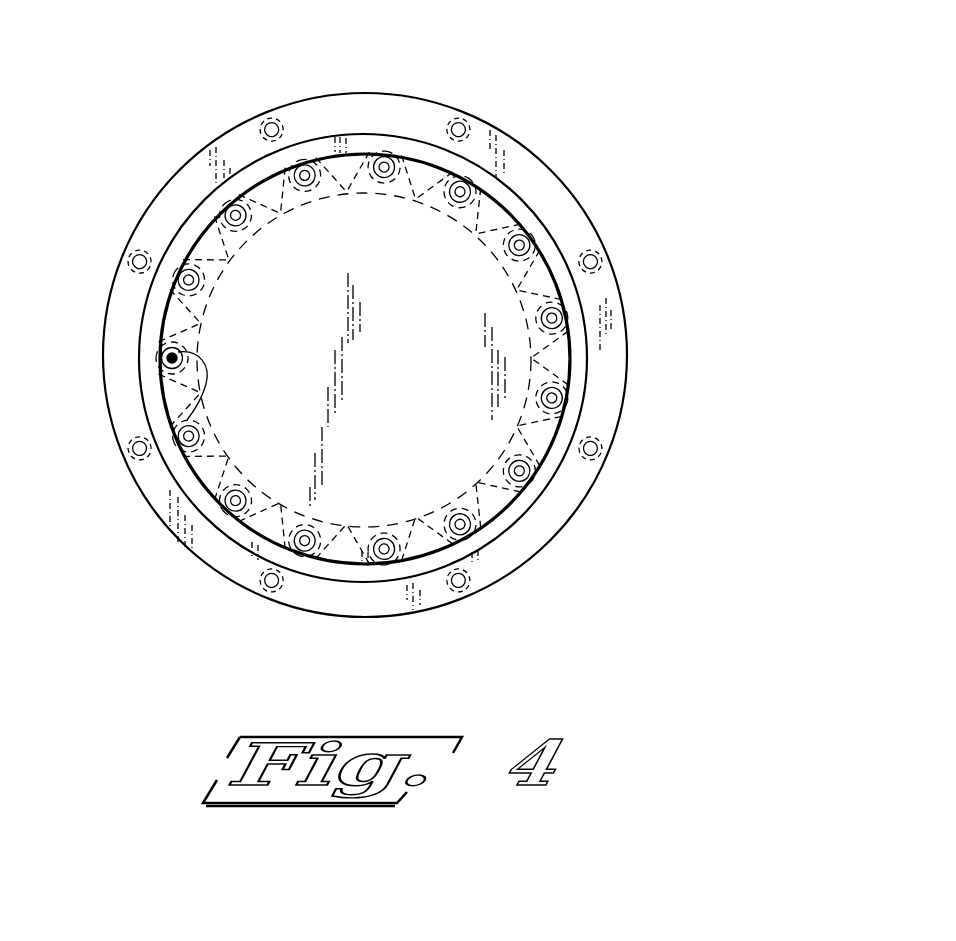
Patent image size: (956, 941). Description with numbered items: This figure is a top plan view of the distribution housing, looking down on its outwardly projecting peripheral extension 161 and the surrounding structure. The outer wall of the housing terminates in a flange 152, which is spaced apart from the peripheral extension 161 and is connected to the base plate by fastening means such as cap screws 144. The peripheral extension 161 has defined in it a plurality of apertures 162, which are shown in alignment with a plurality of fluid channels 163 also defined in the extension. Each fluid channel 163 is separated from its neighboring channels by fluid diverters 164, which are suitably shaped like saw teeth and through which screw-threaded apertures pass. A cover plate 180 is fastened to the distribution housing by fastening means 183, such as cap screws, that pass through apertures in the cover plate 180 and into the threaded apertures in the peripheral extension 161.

The cap screws 144 is at (594, 256).
The flange 152 is at (353, 600).
The outwardly projecting peripheral extension 161 is at (500, 527).
The apertures 162 is at (565, 374).
The fluid channels 163 is at (487, 198).
The fluid diverters 164 is at (488, 200).
The cover plate 180 is at (258, 307).
The fastening means 183 is at (203, 374).